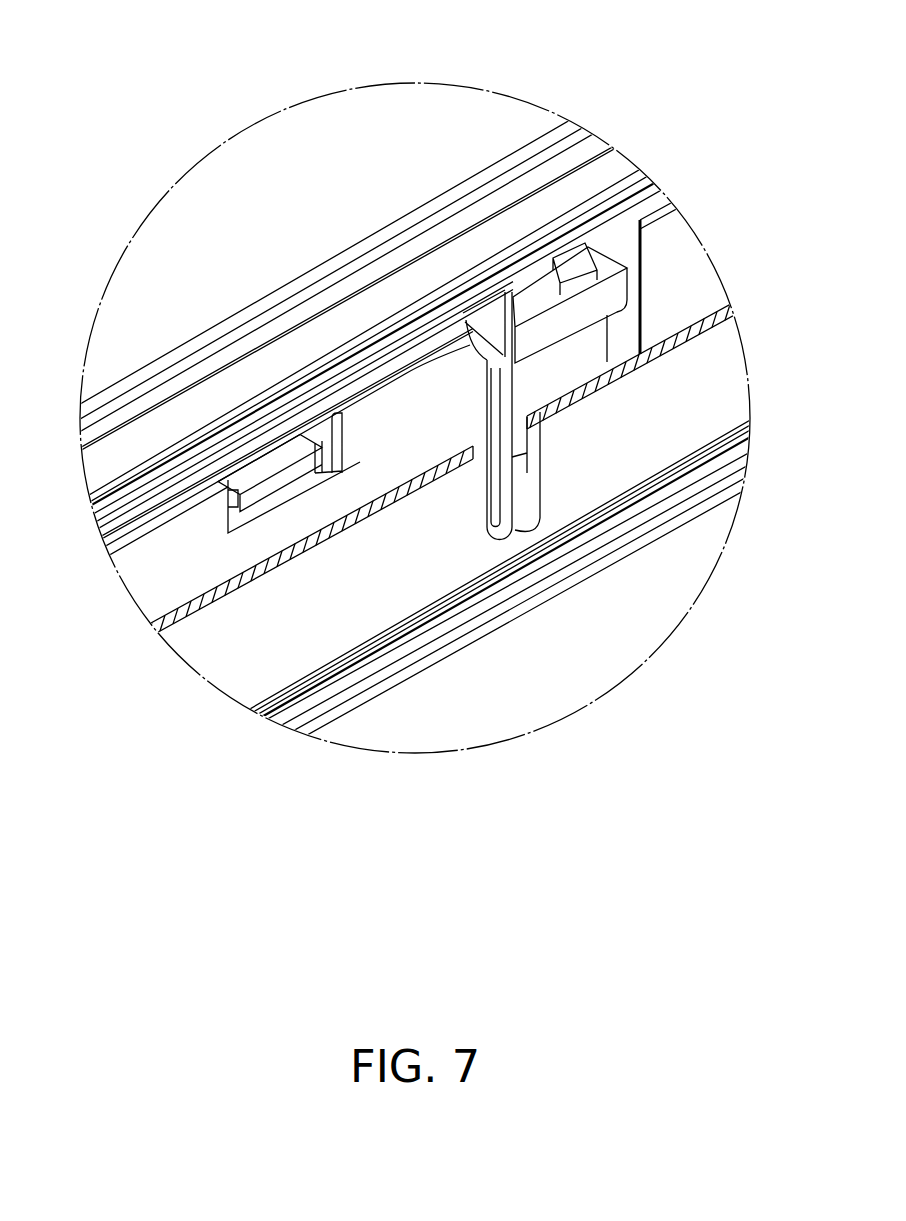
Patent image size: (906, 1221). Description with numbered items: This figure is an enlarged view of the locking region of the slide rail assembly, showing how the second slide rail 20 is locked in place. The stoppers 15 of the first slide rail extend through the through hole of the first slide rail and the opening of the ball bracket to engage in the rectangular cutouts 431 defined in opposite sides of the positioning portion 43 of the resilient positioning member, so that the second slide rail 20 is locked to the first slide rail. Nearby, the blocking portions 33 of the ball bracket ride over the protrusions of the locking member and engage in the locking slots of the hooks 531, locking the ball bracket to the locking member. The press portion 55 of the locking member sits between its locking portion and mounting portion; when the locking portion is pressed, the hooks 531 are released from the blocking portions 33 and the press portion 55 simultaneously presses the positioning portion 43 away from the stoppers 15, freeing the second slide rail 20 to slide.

The stoppers 15 is at (263, 467).
The second slide rail 20 is at (700, 367).
The blocking portions 33 is at (532, 282).
The positioning portion 43 is at (390, 443).
The rectangular cutouts 431 is at (247, 517).
The hooks 531 is at (572, 296).
The press portion 55 is at (463, 358).